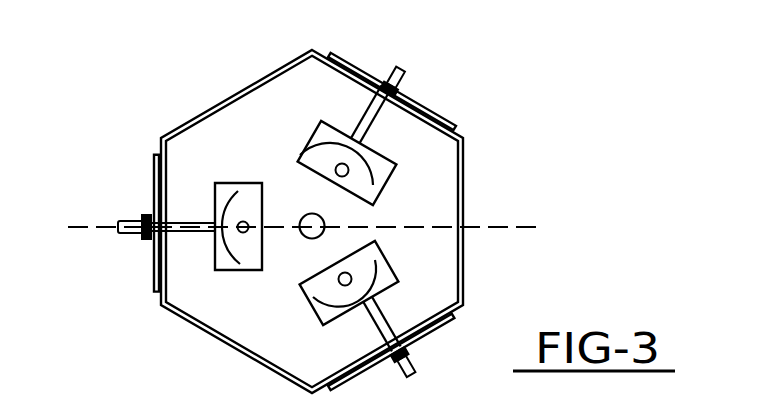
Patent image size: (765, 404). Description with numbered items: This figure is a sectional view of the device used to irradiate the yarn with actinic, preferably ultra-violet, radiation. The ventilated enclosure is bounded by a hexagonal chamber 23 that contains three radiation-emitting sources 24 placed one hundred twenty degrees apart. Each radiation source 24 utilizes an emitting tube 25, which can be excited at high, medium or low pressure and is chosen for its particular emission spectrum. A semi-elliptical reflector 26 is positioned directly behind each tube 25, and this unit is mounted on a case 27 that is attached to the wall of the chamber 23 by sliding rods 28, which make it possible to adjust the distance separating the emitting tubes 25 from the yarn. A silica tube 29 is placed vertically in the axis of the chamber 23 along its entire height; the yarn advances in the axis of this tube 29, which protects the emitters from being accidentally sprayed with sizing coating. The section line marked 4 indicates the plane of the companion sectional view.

The section line 4- 4 is at (68, 227).
The hexagonal chamber 23 is at (466, 197).
The radiation-emitting source 24 is at (303, 150).
The emitting tube 25 is at (322, 177).
The semi-elliptical reflector 26 is at (379, 154).
The case 27 is at (388, 178).
The sliding rod 28 is at (405, 70).
The silica tube 29 is at (311, 240).